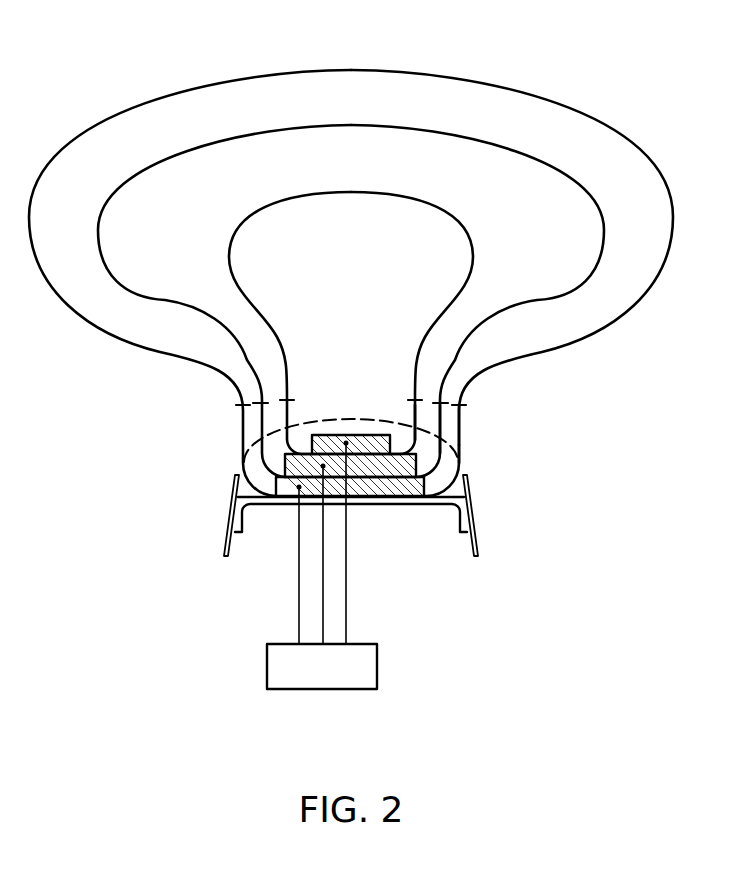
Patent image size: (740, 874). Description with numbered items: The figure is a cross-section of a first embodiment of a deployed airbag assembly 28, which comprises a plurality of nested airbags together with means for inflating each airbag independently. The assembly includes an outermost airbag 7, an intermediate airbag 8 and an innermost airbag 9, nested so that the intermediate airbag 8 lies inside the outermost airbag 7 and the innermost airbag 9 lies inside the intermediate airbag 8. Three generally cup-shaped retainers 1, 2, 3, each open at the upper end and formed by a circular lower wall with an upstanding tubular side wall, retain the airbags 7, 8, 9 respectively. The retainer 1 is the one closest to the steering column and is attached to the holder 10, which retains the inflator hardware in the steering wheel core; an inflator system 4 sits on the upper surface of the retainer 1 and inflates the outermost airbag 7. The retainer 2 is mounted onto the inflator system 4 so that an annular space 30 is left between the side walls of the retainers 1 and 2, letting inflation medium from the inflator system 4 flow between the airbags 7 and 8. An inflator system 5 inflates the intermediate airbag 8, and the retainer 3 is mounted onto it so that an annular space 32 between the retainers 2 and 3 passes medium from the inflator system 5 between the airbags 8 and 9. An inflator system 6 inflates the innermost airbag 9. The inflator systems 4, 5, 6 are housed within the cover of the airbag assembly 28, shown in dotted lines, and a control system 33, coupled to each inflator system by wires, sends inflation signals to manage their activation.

The outermost airbag 7 is at (533, 92).
The intermediate airbag 8 is at (357, 125).
The innermost airbag 9 is at (297, 192).
The airbag assembly 28 is at (333, 418).
The retainer 3 is at (262, 411).
The annular space 32 is at (432, 418).
The annular space 30 is at (450, 425).
The retainer 1 is at (463, 438).
The retainer 2 is at (462, 462).
The inflator system 6 is at (357, 447).
The inflator system 5 is at (385, 468).
The inflator system 4 is at (413, 487).
The holder 10 is at (290, 505).
The control system 33 is at (367, 666).